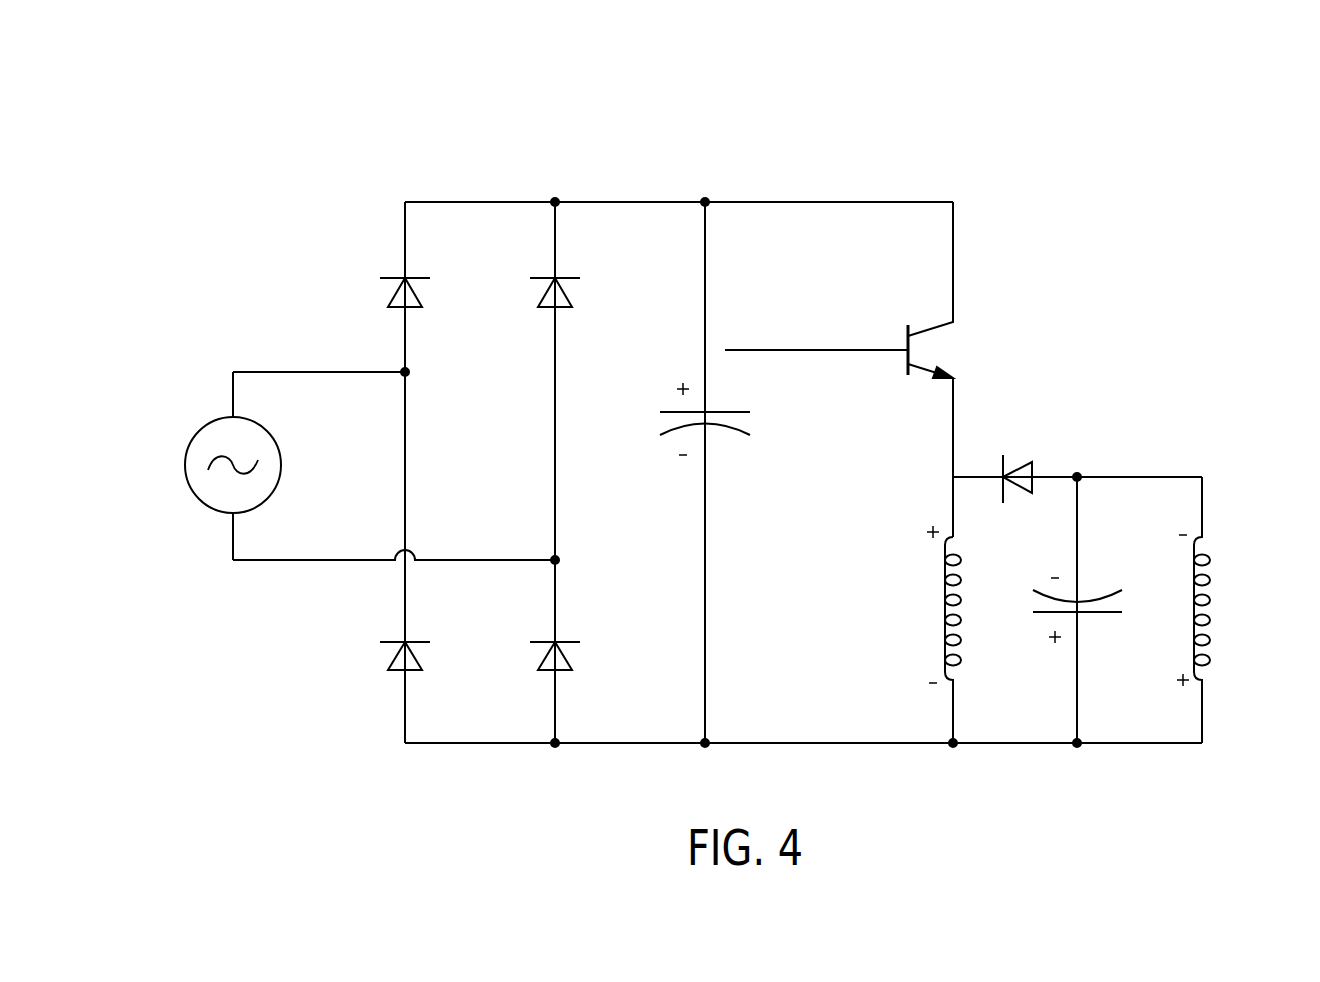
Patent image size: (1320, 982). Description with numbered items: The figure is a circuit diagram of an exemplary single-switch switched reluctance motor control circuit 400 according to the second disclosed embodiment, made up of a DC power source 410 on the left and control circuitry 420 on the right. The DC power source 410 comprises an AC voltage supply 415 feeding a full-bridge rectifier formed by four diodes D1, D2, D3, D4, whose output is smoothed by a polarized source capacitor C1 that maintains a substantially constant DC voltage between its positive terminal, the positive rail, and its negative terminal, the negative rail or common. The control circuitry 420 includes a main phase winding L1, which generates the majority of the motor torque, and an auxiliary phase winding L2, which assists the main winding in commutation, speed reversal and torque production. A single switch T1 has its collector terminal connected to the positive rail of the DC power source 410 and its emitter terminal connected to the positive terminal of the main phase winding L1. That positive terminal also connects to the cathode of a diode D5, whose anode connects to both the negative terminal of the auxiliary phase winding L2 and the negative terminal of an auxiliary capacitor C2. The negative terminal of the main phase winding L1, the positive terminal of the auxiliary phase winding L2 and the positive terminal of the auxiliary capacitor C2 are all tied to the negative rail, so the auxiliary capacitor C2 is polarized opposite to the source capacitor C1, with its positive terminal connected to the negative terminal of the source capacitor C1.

The control circuit 400 is at (1252, 141).
The DC power source 410 is at (720, 187).
The AC voltage supply 415 is at (185, 465).
The control circuitry 420 is at (1202, 187).
The diode D1 is at (389, 291).
The diode D2 is at (389, 656).
The diode D3 is at (539, 291).
The diode D4 is at (539, 656).
The diode D5 is at (1077, 458).
The source capacitor C1 is at (684, 472).
The auxiliary capacitor C2 is at (1056, 610).
The main phase winding L1 is at (925, 634).
The auxiliary phase winding L2 is at (1175, 610).
The switch T1 is at (854, 369).